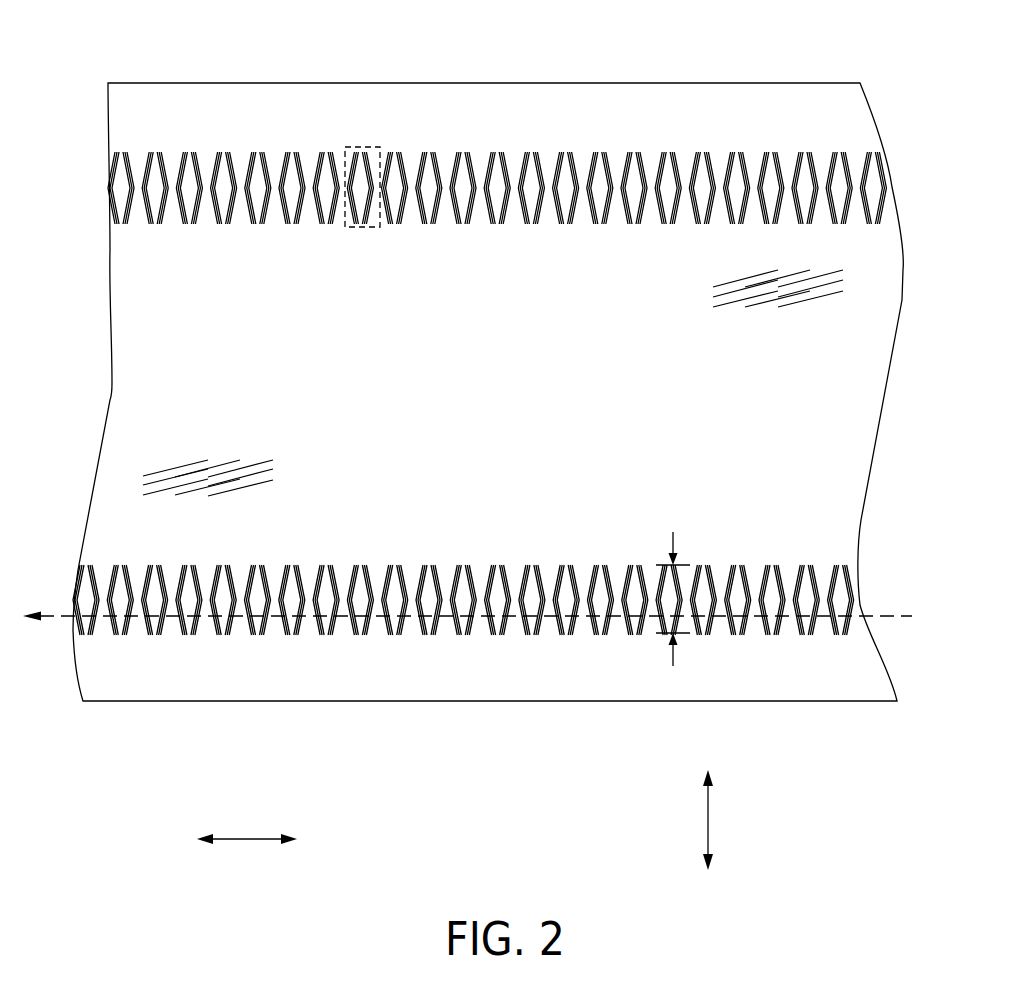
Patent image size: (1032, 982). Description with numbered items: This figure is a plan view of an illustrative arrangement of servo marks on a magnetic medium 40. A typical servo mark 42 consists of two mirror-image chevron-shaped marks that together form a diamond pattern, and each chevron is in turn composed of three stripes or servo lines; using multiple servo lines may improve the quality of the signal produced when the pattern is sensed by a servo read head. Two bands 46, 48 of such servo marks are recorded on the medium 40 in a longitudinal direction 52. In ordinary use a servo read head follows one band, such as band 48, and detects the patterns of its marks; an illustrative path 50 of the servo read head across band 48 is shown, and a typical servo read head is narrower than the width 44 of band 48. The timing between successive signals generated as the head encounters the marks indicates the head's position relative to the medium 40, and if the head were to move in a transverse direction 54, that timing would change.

The magnetic medium 40 is at (202, 83).
The servo mark 42 is at (355, 239).
The width of band 44 is at (673, 588).
The band of servo marks 46 is at (601, 247).
The band of servo marks 48 is at (470, 538).
The path of servo read head 50 is at (903, 611).
The longitudinal direction 52 is at (247, 839).
The transverse direction 54 is at (706, 820).